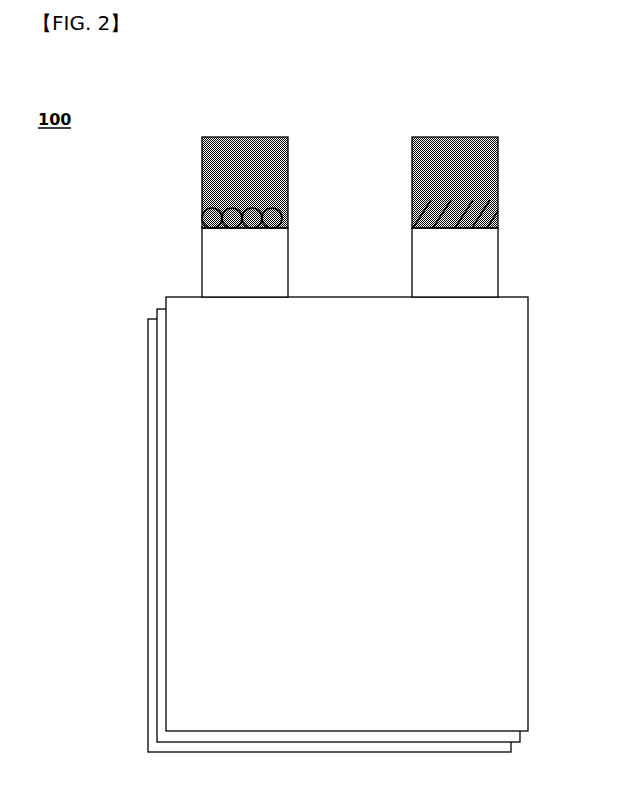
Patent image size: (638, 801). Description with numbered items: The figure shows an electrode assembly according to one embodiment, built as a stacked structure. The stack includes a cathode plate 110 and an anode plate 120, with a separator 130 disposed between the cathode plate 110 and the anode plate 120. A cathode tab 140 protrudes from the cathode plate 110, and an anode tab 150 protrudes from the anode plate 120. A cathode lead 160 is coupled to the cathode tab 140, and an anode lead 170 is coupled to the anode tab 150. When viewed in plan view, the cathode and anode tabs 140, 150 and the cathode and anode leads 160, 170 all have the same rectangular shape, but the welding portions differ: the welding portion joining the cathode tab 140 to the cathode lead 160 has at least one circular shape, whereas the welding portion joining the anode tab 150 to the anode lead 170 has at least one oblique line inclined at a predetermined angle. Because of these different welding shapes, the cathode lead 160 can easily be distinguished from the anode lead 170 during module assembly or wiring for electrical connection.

The cathode plate 110 is at (177, 477).
The anode plate 120 is at (150, 552).
The separator 130 is at (162, 513).
The cathode tab 140 is at (225, 238).
The anode tab 150 is at (482, 250).
The cathode lead 160 is at (225, 162).
The anode lead 170 is at (482, 163).